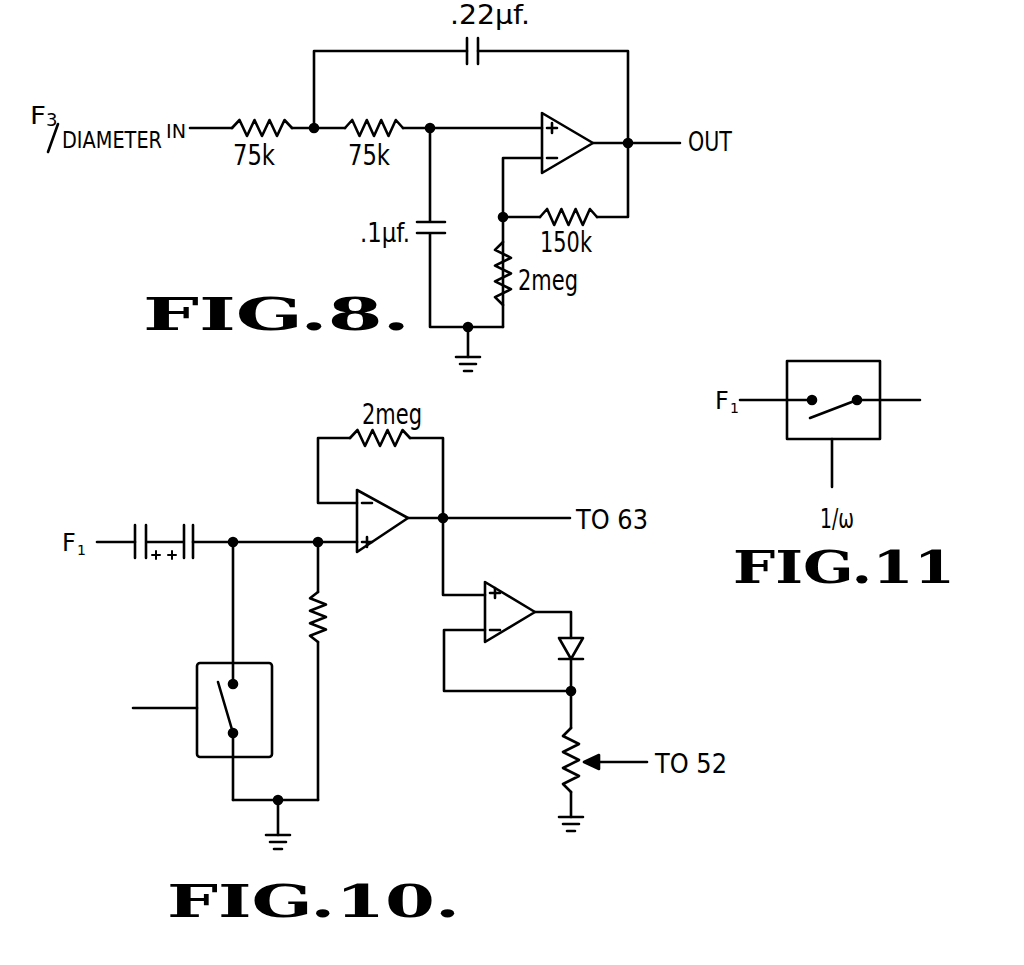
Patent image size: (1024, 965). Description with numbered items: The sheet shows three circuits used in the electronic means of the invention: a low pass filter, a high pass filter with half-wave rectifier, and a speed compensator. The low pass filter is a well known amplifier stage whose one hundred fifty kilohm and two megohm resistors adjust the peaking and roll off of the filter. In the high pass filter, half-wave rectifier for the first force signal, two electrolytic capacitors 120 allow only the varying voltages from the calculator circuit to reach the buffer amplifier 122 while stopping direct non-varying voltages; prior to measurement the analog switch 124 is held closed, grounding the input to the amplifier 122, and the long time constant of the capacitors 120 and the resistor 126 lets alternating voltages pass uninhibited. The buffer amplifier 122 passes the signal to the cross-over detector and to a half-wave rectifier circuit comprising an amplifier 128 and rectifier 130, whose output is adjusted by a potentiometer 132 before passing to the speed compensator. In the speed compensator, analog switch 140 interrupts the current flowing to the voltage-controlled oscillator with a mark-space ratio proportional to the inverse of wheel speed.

In FIG. 10, the electrolytic capacitors 120 is at (186, 526).
In FIG. 10, the buffer amplifier 122 is at (378, 548).
In FIG. 10, the analog switch 124 is at (197, 748).
In FIG. 10, the resistor 126 is at (322, 650).
In FIG. 10, the amplifier 128 is at (506, 600).
In FIG. 10, the rectifier 130 is at (586, 646).
In FIG. 10, the potentiometer 132 is at (575, 733).
In FIG. 11, the analog switch 140 is at (840, 361).